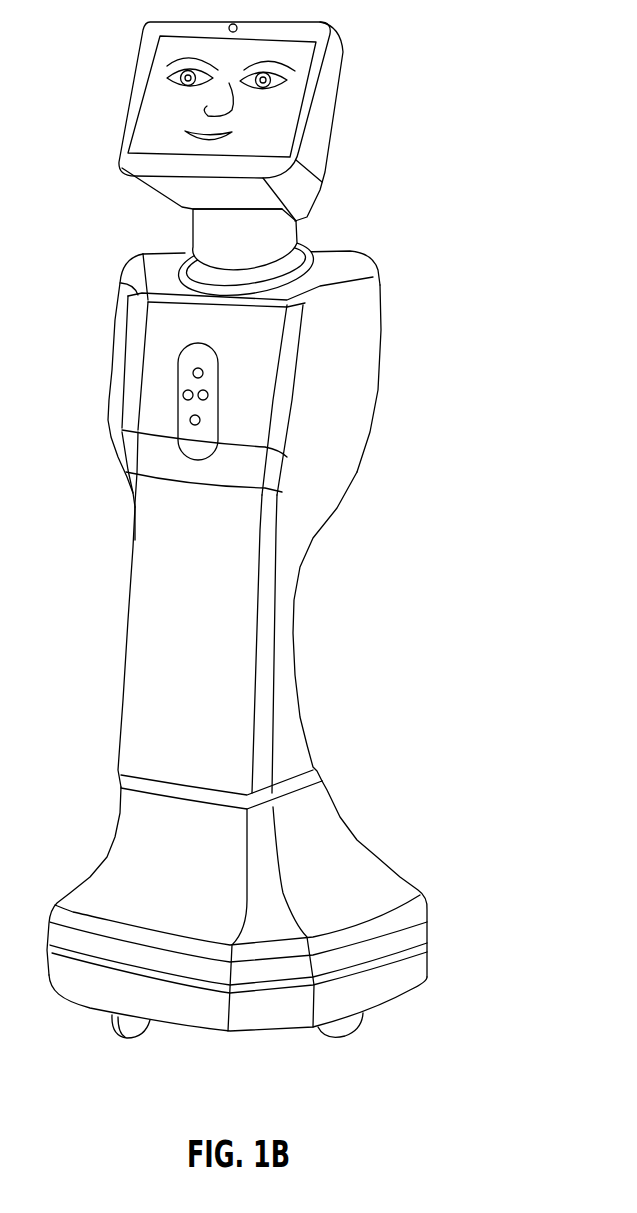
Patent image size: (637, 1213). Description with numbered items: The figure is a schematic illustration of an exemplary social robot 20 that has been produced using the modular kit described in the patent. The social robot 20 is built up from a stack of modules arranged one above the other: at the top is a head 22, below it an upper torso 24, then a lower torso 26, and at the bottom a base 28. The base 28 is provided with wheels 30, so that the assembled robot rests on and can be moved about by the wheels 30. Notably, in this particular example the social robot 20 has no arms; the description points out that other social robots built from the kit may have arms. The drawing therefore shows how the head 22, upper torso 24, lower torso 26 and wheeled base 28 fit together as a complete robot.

The social robot 20 is at (269, 564).
The head 22 is at (183, 107).
The upper torso 24 is at (368, 358).
The lower torso 26 is at (277, 673).
The base 28 is at (413, 970).
The wheels 30 is at (130, 1033).